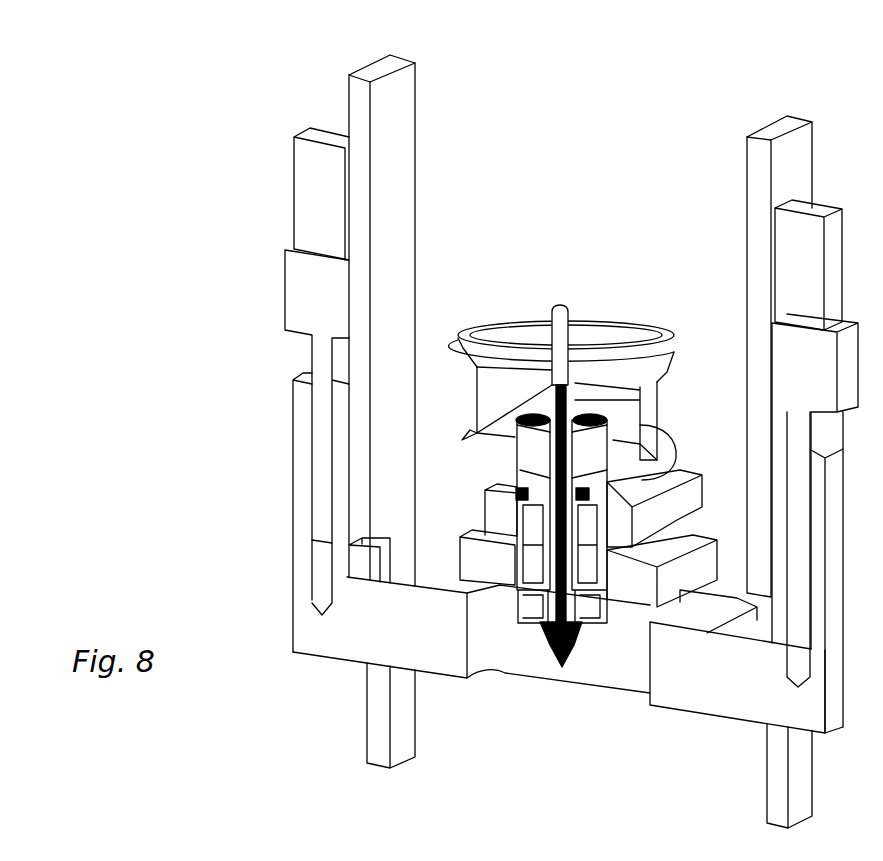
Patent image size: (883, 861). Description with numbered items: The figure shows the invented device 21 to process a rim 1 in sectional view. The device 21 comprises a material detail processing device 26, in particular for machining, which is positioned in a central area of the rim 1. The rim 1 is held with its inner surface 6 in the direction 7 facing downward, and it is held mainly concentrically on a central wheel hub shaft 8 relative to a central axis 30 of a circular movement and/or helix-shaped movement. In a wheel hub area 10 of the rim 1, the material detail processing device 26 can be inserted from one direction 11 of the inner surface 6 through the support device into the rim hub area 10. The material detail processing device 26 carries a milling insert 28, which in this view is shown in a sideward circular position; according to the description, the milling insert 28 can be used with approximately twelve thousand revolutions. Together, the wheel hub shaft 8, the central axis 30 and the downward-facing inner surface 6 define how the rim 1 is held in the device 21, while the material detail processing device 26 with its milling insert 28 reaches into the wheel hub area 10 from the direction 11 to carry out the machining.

The rim 1 is at (623, 292).
The inner surface 6 is at (502, 382).
The direction 7 is at (696, 305).
The central wheel hub shaft 8 is at (572, 222).
The wheel hub area 10 is at (477, 434).
The direction 11 is at (480, 487).
The device to process 21 is at (563, 98).
The material detail processing device 26 is at (606, 726).
The milling insert 28 is at (640, 409).
The central axis 30 is at (555, 764).